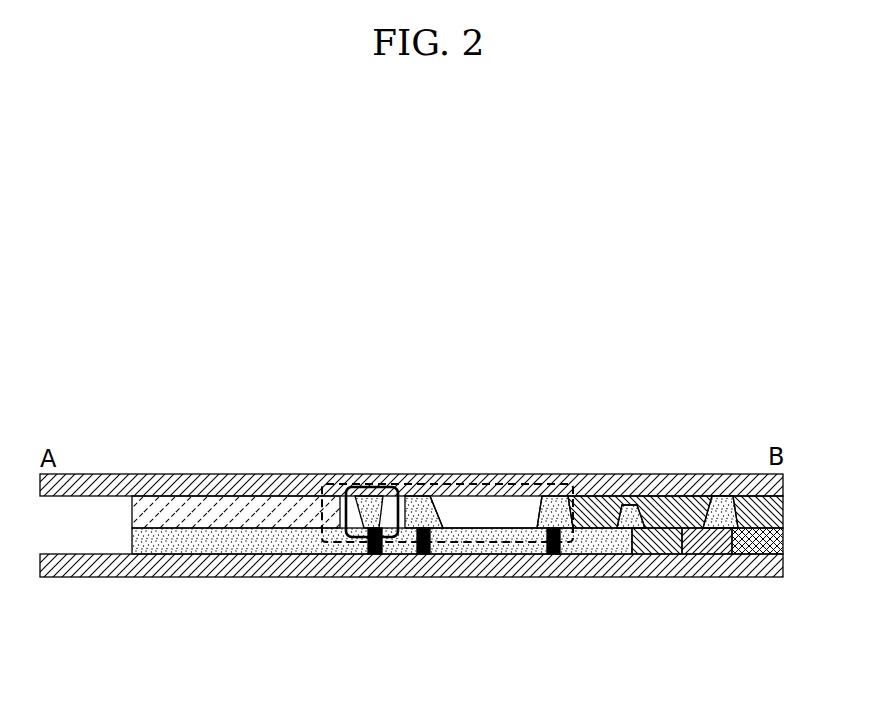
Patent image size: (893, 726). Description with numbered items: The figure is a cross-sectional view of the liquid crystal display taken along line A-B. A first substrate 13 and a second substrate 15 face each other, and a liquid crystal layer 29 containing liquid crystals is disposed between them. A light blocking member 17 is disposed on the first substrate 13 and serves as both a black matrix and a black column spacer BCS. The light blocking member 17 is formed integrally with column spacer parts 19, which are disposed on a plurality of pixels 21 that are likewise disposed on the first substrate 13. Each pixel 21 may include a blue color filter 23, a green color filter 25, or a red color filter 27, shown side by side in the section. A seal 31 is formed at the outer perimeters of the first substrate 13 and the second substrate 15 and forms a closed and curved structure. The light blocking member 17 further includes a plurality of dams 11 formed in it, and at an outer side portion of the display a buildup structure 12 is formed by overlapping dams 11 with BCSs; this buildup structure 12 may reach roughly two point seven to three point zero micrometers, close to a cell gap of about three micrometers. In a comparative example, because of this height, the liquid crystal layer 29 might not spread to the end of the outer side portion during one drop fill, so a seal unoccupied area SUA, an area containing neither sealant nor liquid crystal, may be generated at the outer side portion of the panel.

The dams 11 is at (375, 554).
The buildup structure 12 is at (368, 497).
The first substrate 13 is at (92, 577).
The second substrate 15 is at (100, 474).
The light blocking member 17 is at (132, 535).
The column spacer parts 19 is at (720, 496).
The pixels 21 is at (707, 610).
The blue color filter 23 is at (655, 554).
The green color filter 25 is at (705, 554).
The red color filter 27 is at (757, 554).
The liquid crystal layer 29 is at (784, 510).
The seal 31 is at (132, 507).
The black column spacer BCS is at (424, 496).
The seal unoccupied area SUA is at (518, 472).